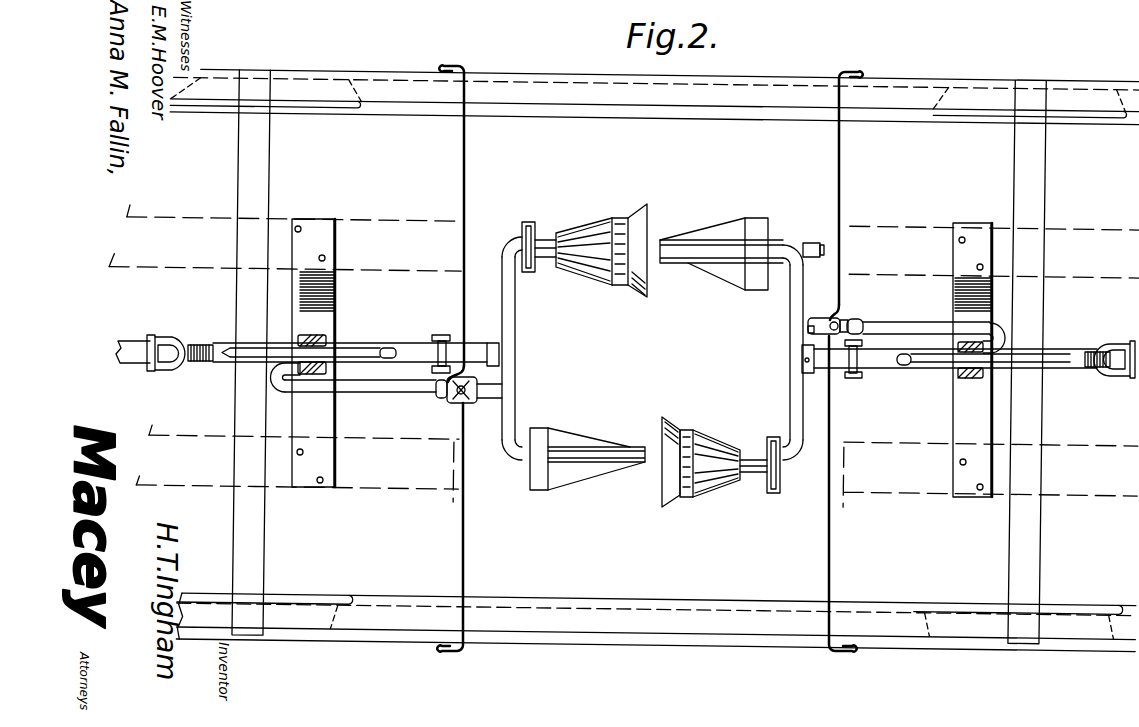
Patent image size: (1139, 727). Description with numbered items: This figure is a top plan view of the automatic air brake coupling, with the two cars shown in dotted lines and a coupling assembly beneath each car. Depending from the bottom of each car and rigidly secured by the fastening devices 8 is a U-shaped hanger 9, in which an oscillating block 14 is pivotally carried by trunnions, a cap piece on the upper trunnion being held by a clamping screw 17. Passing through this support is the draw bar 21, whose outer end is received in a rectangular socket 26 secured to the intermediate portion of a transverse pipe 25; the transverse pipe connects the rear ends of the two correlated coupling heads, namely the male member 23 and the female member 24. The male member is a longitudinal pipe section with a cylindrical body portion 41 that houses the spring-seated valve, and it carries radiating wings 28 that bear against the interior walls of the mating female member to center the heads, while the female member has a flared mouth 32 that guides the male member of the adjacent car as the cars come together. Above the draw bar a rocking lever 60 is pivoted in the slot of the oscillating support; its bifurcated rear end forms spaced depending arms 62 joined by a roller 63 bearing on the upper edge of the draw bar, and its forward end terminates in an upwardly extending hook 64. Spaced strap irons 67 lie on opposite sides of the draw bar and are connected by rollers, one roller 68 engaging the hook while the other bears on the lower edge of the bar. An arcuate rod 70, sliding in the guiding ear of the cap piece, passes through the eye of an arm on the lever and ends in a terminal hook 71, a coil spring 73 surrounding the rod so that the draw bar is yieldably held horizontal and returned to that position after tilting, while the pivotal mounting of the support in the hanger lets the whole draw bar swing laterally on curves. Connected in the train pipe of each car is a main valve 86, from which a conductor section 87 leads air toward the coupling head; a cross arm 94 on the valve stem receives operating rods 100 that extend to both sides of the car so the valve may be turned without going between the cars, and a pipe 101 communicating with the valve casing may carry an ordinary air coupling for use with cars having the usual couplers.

The fastening devices 8 is at (300, 227).
The hanger 9 is at (322, 243).
The oscillating block 14 is at (991, 346).
The clamping screw 17 is at (936, 364).
The draw bar 21 is at (128, 358).
The male member 23 is at (620, 451).
The female member 24 is at (745, 452).
The transverse pipe 25 is at (510, 320).
The rectangular socket 26 is at (495, 346).
The radiating wings 28 is at (720, 224).
The flared mouth 32 is at (638, 222).
The cylindrical body portion 41 is at (282, 393).
The rocking lever 60 is at (213, 359).
The depending arms 62 is at (168, 371).
The roller 63 is at (161, 340).
The hook 64 is at (836, 338).
The strap irons 67 is at (863, 337).
The roller 68 is at (436, 371).
The arcuate rod 70 is at (365, 344).
The terminal hook 71 is at (397, 347).
The coil spring 73 is at (262, 350).
The main valve 86 is at (475, 378).
The conductor section 87 is at (366, 393).
The cross arm 94 is at (446, 392).
The operating rods 100 is at (464, 166).
The pipe 101 is at (478, 398).